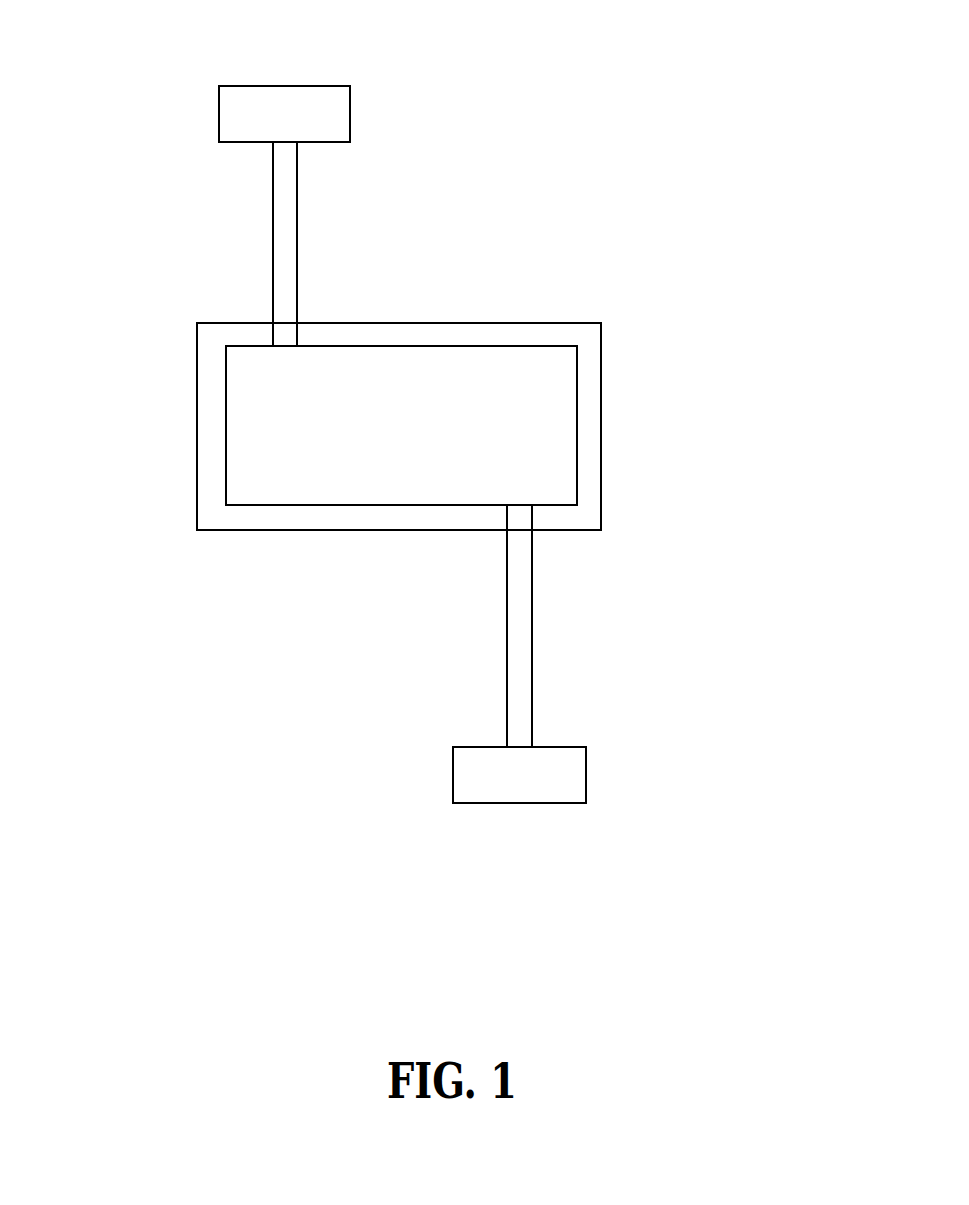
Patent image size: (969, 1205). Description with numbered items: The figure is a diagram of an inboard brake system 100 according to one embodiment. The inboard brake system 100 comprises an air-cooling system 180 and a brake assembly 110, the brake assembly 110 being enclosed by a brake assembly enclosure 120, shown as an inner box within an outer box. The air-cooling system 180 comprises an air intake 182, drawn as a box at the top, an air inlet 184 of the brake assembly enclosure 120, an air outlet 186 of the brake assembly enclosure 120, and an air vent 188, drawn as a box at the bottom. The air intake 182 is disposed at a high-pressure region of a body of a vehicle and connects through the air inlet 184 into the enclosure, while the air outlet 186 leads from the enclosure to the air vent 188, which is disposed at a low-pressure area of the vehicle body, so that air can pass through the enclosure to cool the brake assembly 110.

The inboard brake system 100 is at (128, 154).
The air-cooling system 180 is at (564, 196).
The air intake 182 is at (349, 113).
The air inlet 184 is at (280, 348).
The air outlet 186 is at (520, 507).
The air vent 188 is at (585, 772).
The brake assembly enclosure 120 is at (601, 428).
The brake assembly 110 is at (253, 505).